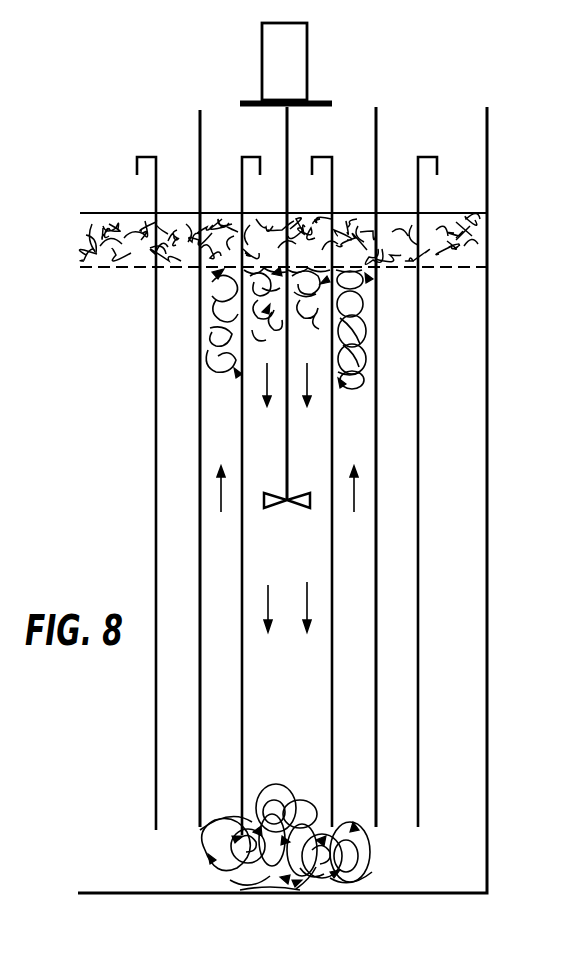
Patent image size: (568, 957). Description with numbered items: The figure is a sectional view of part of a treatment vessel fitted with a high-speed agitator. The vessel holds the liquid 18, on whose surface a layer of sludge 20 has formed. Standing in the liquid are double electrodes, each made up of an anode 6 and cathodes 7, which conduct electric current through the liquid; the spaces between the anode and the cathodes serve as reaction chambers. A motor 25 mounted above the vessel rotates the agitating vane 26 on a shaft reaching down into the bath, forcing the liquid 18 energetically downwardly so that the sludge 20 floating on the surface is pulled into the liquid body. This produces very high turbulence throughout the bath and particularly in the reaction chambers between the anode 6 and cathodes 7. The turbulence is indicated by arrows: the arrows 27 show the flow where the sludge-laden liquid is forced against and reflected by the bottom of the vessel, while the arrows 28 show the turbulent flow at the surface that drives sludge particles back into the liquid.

The anode 6 is at (200, 147).
The cathode 7 is at (427, 157).
The liquid 18 is at (465, 355).
The sludge 20 is at (455, 242).
The motor 25 is at (297, 62).
The agitating vane 26 is at (263, 502).
The arrows 27 is at (318, 883).
The arrows 28 is at (238, 268).